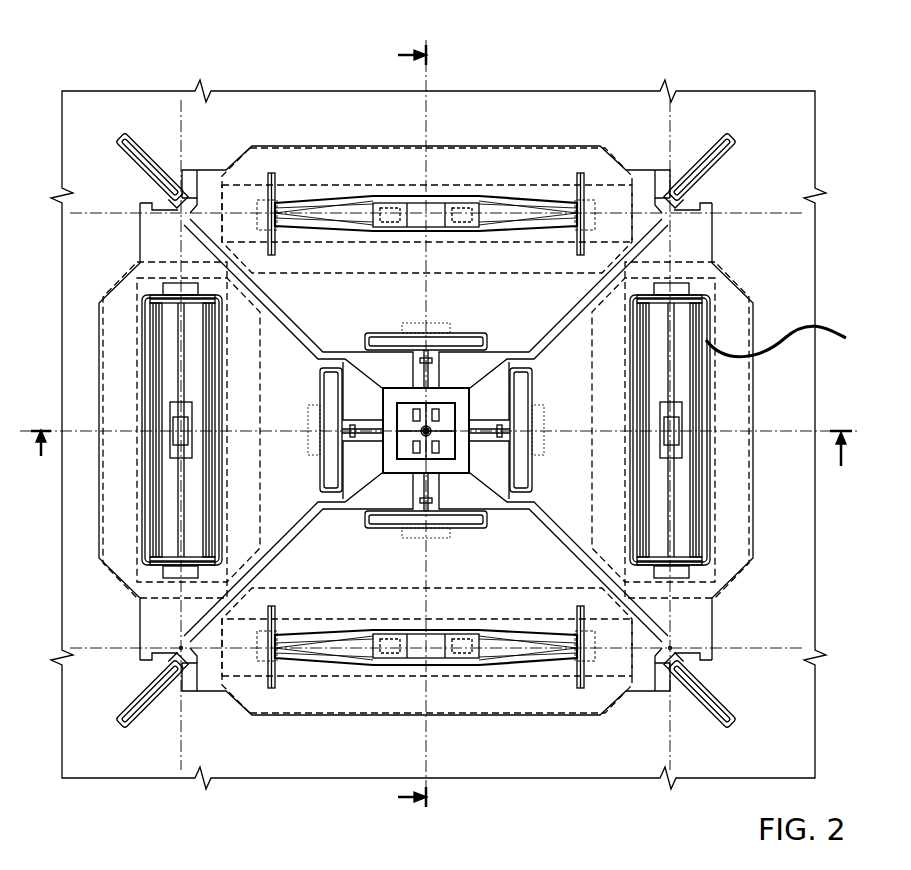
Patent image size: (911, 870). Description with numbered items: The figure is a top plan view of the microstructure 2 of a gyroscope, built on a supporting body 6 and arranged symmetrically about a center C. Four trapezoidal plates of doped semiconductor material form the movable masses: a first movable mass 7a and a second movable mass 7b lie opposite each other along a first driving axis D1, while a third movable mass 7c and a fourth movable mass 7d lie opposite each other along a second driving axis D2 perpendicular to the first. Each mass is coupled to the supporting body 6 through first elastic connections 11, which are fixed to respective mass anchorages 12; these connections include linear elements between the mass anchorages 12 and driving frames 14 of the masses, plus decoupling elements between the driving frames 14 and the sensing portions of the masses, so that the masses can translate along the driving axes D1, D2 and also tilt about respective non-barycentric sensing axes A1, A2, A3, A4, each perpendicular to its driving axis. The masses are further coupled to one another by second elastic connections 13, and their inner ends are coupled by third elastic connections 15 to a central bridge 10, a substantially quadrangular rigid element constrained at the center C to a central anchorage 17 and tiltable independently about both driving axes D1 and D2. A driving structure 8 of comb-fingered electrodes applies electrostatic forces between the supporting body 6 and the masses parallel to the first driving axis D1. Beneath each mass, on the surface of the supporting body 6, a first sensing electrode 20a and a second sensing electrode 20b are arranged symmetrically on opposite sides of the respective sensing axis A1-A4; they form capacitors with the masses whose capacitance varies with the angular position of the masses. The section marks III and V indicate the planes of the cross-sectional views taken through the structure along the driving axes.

The microstructure 2 is at (772, 72).
The supporting body 6 is at (145, 88).
The first movable mass 7a is at (128, 272).
The second movable mass 7b is at (712, 270).
The third movable mass 7c is at (652, 185).
The fourth movable mass 7d is at (217, 715).
The driving structure 8 is at (146, 588).
The central bridge 10 is at (440, 398).
The first elastic connections 11 is at (265, 215).
The mass anchorages 12 is at (462, 208).
The second elastic connections 13 is at (120, 138).
The driving frames 14 is at (792, 341).
The third elastic connections 15 is at (375, 334).
The central anchorage 17 is at (440, 430).
The first sensing electrodes 20a is at (392, 150).
The second sensing electrodes 20b is at (500, 266).
The sensing axis A1 is at (178, 730).
The sensing axis A2 is at (664, 735).
The sensing axis A3 is at (112, 212).
The sensing axis A4 is at (740, 658).
The center C is at (424, 428).
The first driving axis D1 is at (826, 430).
The second driving axis D2 is at (448, 422).
The section line III is at (441, 448).
The section line V is at (410, 427).